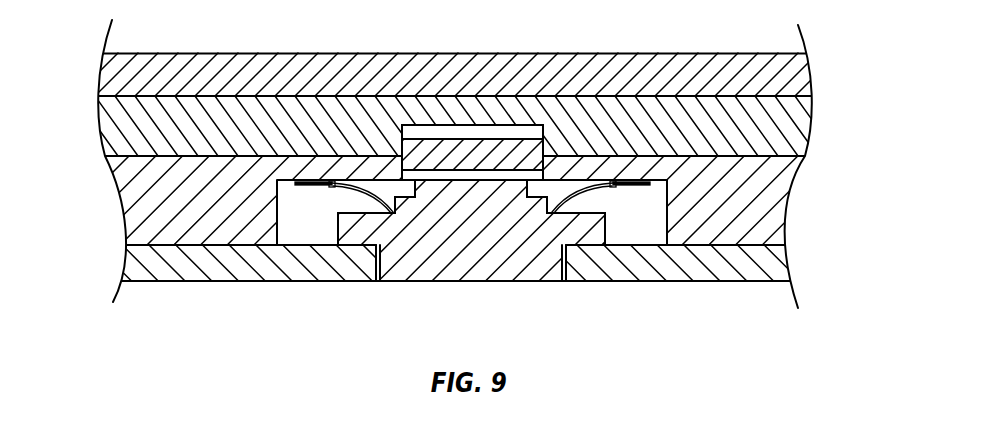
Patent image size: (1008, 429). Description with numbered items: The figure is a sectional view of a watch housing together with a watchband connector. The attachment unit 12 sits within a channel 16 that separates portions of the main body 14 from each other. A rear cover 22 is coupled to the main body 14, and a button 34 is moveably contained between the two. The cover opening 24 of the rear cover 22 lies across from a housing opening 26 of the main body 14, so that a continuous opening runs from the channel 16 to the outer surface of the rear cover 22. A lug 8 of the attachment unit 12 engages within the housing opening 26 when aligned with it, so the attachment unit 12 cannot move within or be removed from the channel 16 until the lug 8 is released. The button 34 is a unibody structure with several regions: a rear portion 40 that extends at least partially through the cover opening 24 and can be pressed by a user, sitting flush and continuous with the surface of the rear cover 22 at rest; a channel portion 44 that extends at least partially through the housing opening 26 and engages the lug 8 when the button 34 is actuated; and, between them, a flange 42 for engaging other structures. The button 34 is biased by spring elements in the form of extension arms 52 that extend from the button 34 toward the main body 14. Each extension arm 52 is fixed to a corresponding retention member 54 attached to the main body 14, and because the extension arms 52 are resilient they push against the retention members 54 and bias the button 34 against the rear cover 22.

The lug 8 is at (468, 125).
The attachment unit 12 is at (800, 117).
The main body 14 is at (122, 77).
The channel 16 is at (788, 155).
The rear cover 22 is at (218, 282).
The cover opening 24 is at (382, 282).
The housing opening 26 is at (405, 150).
The button 34 is at (437, 282).
The rear portion 40 is at (528, 282).
The flange 42 is at (578, 282).
The channel portion 44 is at (515, 175).
The extension arms 52 is at (303, 183).
The retention members 54 is at (332, 183).